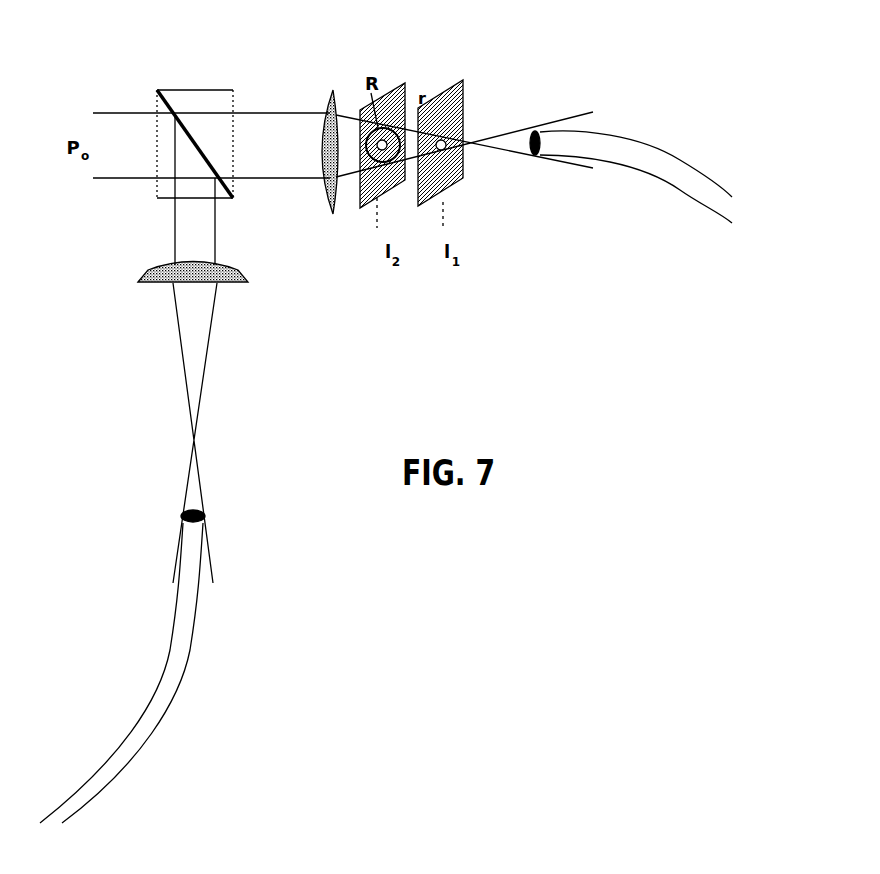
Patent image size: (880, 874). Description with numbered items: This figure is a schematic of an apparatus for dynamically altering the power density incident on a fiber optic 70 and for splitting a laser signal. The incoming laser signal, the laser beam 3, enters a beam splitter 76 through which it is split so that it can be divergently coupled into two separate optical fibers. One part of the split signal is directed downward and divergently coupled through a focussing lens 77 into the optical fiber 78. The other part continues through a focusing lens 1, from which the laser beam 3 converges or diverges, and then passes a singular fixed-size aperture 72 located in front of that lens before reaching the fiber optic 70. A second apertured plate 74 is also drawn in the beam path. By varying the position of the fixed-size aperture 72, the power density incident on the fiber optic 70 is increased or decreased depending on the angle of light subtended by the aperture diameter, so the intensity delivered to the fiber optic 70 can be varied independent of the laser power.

The laser beam 3 is at (117, 112).
The beam splitter 76 is at (202, 87).
The focussing lens 77 is at (247, 278).
The optical fiber 78 is at (190, 650).
The focusing lens 1 is at (332, 90).
The aperture plate with ring 74 is at (397, 83).
The singular fixed-size aperture 72 is at (463, 80).
The fiber optic 70 is at (653, 150).